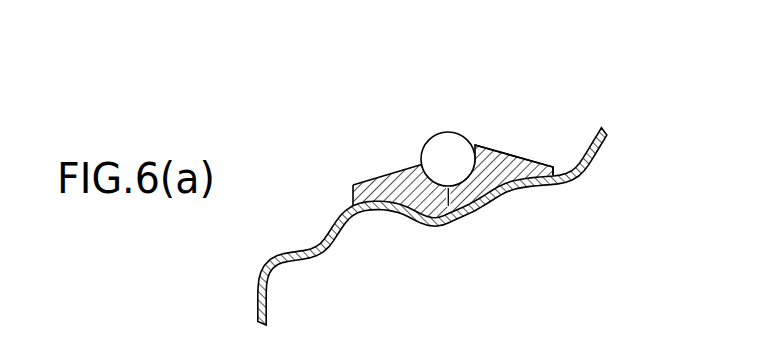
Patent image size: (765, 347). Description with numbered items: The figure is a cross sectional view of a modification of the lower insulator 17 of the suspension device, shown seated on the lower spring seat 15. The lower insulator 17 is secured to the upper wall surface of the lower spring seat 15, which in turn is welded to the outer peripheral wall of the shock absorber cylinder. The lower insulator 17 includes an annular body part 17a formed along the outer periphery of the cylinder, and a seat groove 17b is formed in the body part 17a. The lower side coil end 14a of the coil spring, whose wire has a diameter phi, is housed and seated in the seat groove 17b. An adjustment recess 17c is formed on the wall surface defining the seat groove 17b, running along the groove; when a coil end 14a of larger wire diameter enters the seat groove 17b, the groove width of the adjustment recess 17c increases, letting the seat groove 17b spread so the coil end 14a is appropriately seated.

The lower insulator 17 is at (357, 125).
The body part 17a is at (507, 149).
The seat groove 17b is at (473, 205).
The adjustment recess 17c is at (440, 221).
The lower spring seat 15 is at (533, 190).
The lower side coil end 14a is at (448, 133).